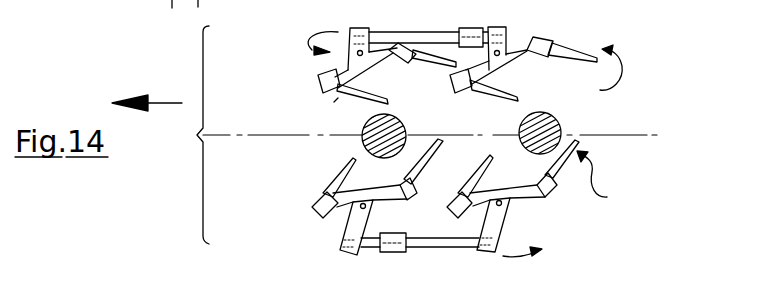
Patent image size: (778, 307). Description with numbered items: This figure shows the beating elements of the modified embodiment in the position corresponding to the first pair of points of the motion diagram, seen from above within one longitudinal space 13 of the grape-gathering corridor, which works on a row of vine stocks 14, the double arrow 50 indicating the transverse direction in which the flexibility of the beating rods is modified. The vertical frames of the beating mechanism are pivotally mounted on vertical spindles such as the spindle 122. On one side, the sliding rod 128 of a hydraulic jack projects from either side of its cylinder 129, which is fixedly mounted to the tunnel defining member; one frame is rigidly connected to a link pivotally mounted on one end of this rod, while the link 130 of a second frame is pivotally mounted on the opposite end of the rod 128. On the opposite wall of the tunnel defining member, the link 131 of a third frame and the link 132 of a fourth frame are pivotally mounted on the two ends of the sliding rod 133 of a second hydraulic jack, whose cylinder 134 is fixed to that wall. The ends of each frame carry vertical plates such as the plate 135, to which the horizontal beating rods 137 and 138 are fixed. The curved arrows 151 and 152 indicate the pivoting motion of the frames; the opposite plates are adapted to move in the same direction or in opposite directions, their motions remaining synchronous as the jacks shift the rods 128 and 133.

The longitudinal space 13 is at (413, 135).
The row of vine stocks 14 is at (375, 133).
The double arrow 50 is at (182, 101).
The vertical spindle 122 is at (505, 58).
The sliding rod 128 is at (427, 38).
The cylinder 129 is at (469, 42).
The link 130 is at (507, 42).
The link 131 is at (357, 221).
The link 132 is at (490, 227).
The sliding rod 133 is at (440, 243).
The cylinder 134 is at (388, 244).
The vertical plate 135 is at (320, 86).
The horizontal rod 137 is at (488, 93).
The horizontal rod 138 is at (335, 185).
The pivoting direction arrow 151 is at (607, 174).
The pivoting direction arrow 152 is at (626, 71).